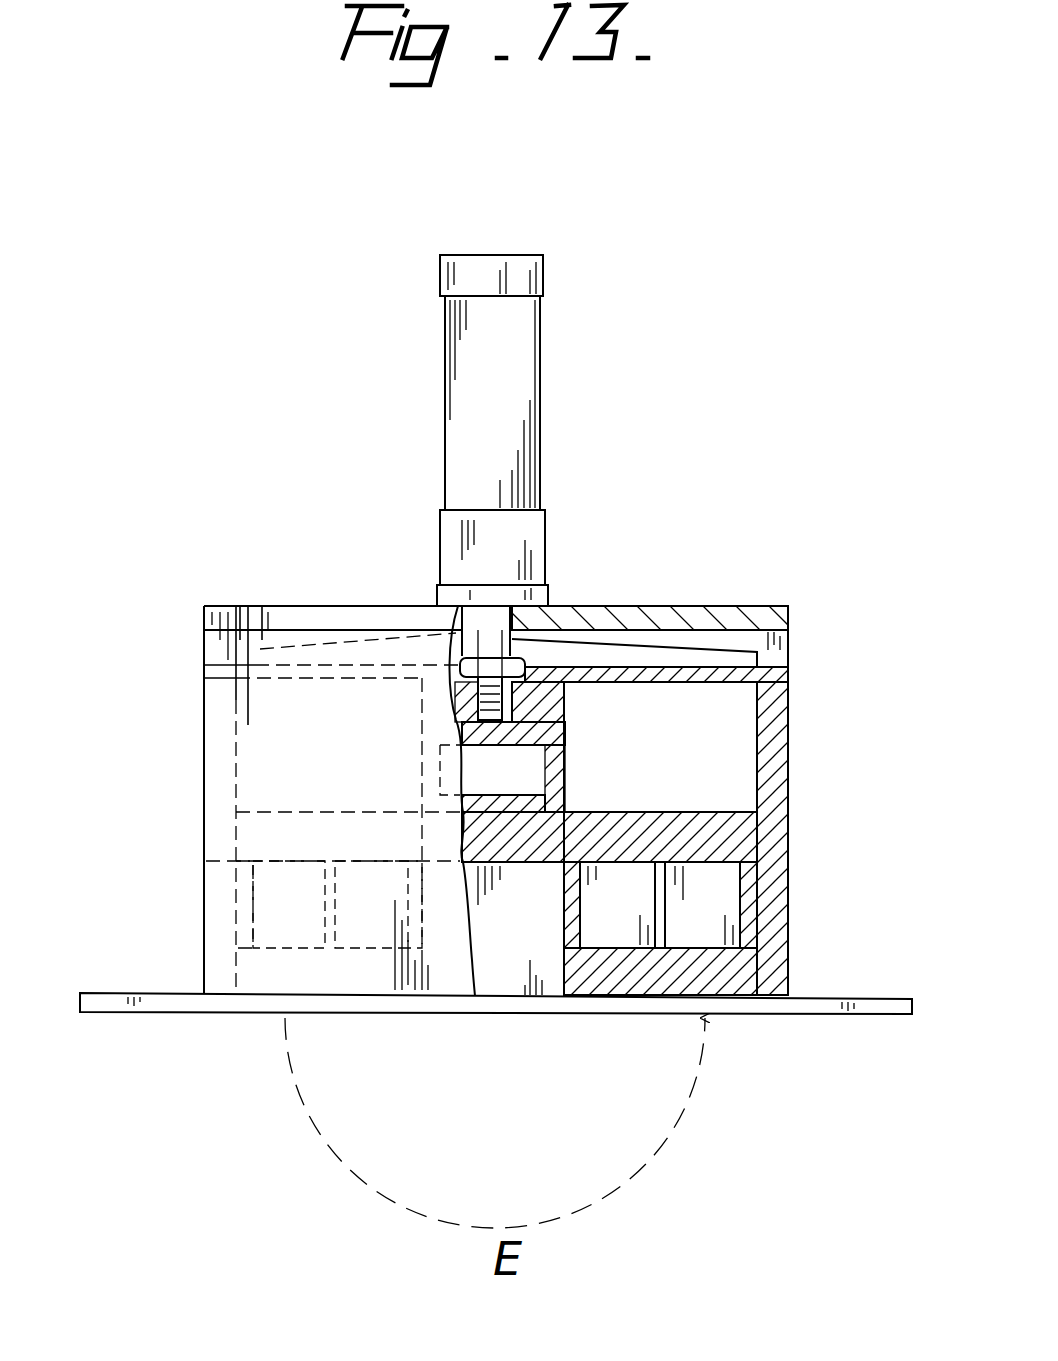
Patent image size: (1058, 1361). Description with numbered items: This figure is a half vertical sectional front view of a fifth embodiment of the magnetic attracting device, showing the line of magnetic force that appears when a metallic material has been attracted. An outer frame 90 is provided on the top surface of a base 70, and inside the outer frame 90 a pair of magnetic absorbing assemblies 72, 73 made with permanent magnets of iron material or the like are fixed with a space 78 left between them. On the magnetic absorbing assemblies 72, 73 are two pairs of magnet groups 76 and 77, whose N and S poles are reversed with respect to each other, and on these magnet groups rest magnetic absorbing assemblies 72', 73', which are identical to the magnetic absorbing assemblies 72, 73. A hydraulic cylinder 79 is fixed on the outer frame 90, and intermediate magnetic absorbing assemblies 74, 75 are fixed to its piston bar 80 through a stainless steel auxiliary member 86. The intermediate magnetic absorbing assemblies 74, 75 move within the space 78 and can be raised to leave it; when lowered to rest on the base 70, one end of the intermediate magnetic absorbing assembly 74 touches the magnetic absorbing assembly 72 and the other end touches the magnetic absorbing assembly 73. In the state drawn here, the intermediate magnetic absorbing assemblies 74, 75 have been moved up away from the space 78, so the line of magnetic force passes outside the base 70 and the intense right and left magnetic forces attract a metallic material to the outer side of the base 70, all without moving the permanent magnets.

The base 70 is at (813, 1008).
The magnetic absorbing assembly 72 is at (339, 854).
The magnetic absorbing assembly 72' is at (215, 846).
The magnetic absorbing assembly 73 is at (614, 858).
The magnetic absorbing assembly 73' is at (820, 838).
The intermediate magnetic absorbing assembly 74 is at (609, 903).
The intermediate magnetic absorbing assembly 75 is at (535, 700).
The magnet group 76 is at (240, 908).
The magnet group 77 is at (712, 912).
The space 78 is at (512, 980).
The hydraulic cylinder 79 is at (510, 440).
The piston bar 80 is at (462, 652).
The stainless steel auxiliary member 86 is at (565, 778).
The outer frame 90 is at (689, 608).